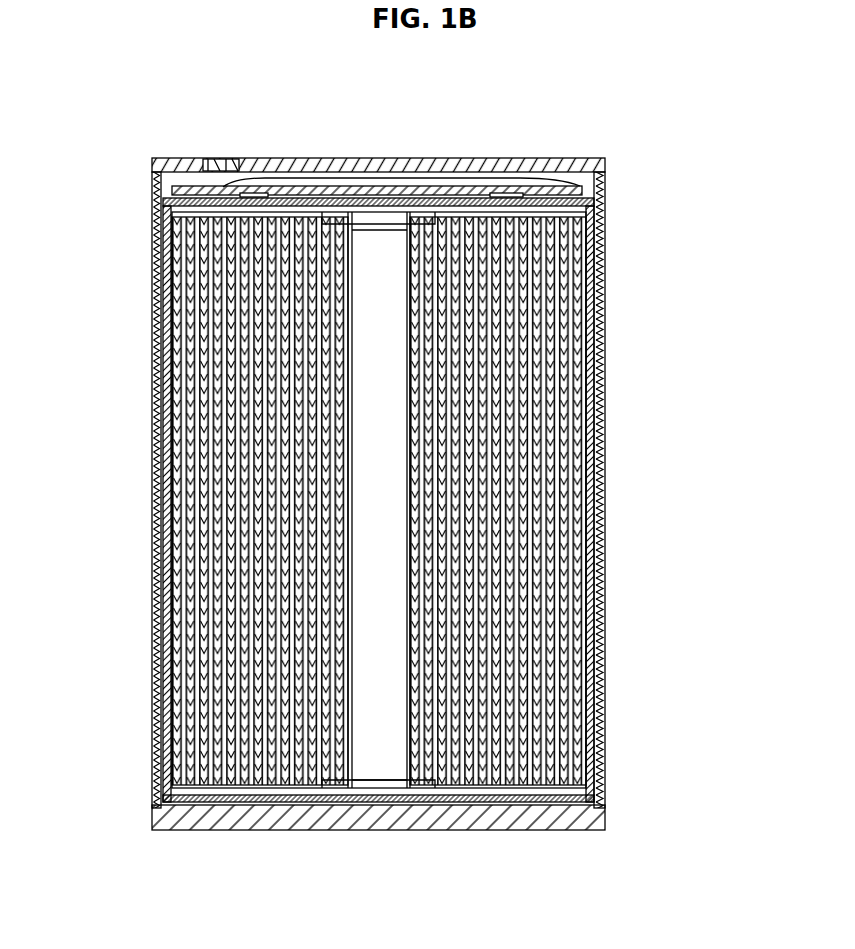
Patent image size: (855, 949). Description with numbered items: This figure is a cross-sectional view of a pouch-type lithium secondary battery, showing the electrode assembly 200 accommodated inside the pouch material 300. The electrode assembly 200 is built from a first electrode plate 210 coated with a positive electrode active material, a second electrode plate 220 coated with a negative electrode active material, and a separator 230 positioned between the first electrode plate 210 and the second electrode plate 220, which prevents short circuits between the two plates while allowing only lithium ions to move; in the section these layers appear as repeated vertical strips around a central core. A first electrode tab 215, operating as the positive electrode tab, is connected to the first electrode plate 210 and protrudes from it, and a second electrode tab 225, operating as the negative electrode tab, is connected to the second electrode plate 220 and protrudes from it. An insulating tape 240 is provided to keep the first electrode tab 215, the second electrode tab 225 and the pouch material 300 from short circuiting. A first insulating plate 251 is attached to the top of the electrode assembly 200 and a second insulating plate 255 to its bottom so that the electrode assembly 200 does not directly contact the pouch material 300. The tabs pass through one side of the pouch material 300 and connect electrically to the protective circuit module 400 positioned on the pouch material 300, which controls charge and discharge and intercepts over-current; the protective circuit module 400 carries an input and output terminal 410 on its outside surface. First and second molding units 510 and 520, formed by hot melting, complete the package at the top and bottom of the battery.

The electrode assembly 200 is at (483, 499).
The first electrode plate 210 is at (605, 357).
The first electrode tab 215 is at (605, 227).
The second electrode plate 220 is at (577, 447).
The second electrode tab 225 is at (605, 206).
The separator 230 is at (560, 407).
The insulating tape 240 is at (605, 252).
The first insulating plate 251 is at (725, 485).
The second insulating plate 255 is at (598, 790).
The pouch material 300 is at (152, 254).
The protective circuit module 400 is at (556, 158).
The input and output terminal 410 is at (239, 158).
The first molding unit 510 is at (370, 158).
The second molding unit 520 is at (367, 818).